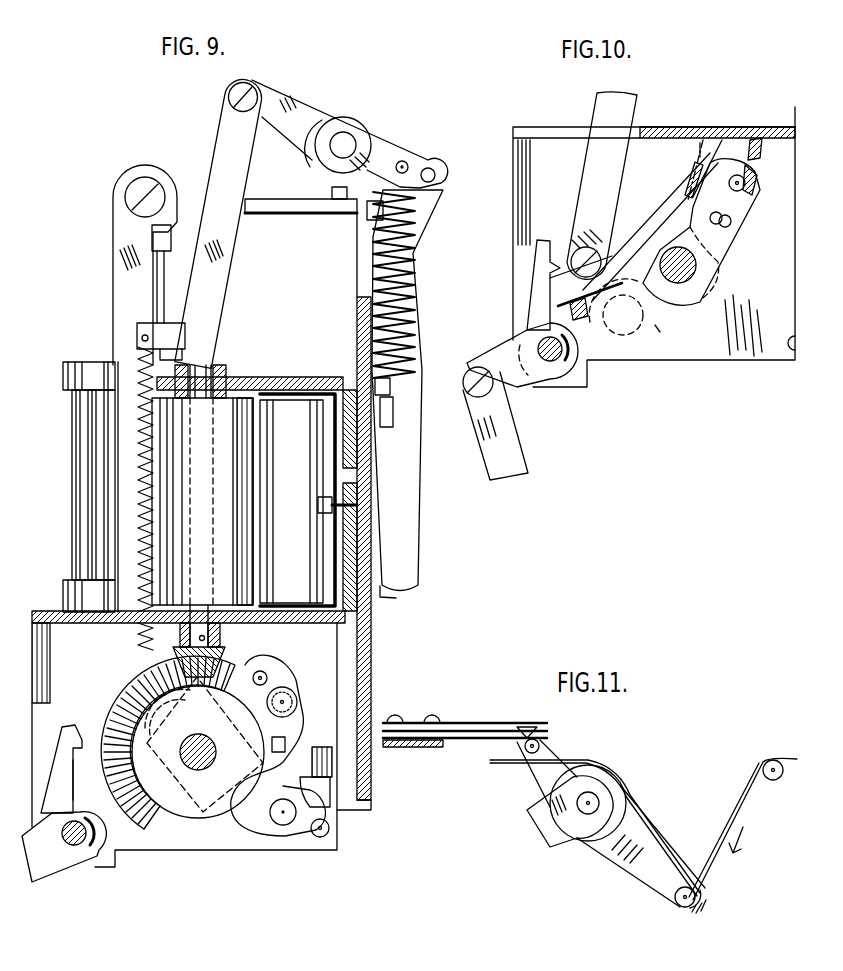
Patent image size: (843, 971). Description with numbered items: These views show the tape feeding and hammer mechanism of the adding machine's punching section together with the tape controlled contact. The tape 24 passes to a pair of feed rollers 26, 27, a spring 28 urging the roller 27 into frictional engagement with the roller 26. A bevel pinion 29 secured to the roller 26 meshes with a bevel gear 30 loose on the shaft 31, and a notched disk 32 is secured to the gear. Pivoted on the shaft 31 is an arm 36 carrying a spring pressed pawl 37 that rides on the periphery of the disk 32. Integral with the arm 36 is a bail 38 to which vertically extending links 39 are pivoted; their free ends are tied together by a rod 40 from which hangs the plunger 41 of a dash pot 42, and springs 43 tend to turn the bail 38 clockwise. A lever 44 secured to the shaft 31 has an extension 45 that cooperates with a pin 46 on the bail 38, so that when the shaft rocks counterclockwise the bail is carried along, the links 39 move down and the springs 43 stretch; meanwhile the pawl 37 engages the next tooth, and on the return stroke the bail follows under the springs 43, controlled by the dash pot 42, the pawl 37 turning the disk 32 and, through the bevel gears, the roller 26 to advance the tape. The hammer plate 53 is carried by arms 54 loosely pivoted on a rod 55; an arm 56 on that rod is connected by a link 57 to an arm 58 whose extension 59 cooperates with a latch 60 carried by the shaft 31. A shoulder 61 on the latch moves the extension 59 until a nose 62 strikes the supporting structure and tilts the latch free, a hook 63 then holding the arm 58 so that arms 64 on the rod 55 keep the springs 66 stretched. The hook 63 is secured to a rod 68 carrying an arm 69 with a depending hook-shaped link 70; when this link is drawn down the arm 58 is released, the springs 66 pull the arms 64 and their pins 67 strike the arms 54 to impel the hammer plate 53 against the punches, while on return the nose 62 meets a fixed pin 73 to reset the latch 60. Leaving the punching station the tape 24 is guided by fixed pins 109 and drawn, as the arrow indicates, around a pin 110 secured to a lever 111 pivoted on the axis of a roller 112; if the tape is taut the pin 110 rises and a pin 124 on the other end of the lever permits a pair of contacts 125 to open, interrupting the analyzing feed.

In FIG. 9, the tape 24 is at (253, 462).
In FIG. 11, the tape 24 is at (503, 763).
In FIG. 9, the feed roller 26 is at (225, 420).
In FIG. 9, the feed roller 27 is at (287, 417).
In FIG. 9, the spring 28 is at (335, 505).
In FIG. 9, the bevel pinion 29 is at (230, 647).
In FIG. 9, the bevel gear 30 is at (148, 815).
In FIG. 9, the shaft 31 is at (203, 762).
In FIG. 10, the shaft 31 is at (697, 265).
In FIG. 9, the notched disk 32 is at (257, 780).
In FIG. 9, the arm 36 is at (279, 681).
In FIG. 9, the spring pressed pawl 37 is at (285, 742).
In FIG. 9, the bail 38 is at (110, 780).
In FIG. 10, the bail 38 is at (652, 328).
In FIG. 9, the links 39 is at (135, 470).
In FIG. 9, the rod 40 is at (147, 187).
In FIG. 9, the plunger 41 is at (158, 277).
In FIG. 9, the dash pot 42 is at (77, 417).
In FIG. 9, the springs 43 is at (140, 393).
In FIG. 9, the lever 44 is at (268, 818).
In FIG. 10, the lever 44 is at (712, 298).
In FIG. 10, the extension 45 is at (562, 305).
In FIG. 10, the pin 46 is at (620, 337).
In FIG. 9, the hammer plate 53 is at (378, 592).
In FIG. 9, the arms 54 is at (407, 350).
In FIG. 9, the rod 55 is at (332, 147).
In FIG. 9, the arm 56 is at (280, 110).
In FIG. 9, the link 57 is at (222, 247).
In FIG. 10, the link 57 is at (607, 110).
In FIG. 10, the arm 58 is at (617, 252).
In FIG. 10, the extension 59 is at (692, 168).
In FIG. 9, the latch 60 is at (320, 778).
In FIG. 10, the latch 60 is at (700, 143).
In FIG. 10, the shoulder 61 is at (722, 150).
In FIG. 9, the nose 62 is at (331, 824).
In FIG. 10, the nose 62 is at (760, 140).
In FIG. 9, the hook 63 is at (64, 732).
In FIG. 10, the hook 63 is at (540, 248).
In FIG. 9, the arms 64 is at (410, 153).
In FIG. 9, the springs 66 is at (403, 220).
In FIG. 9, the pins 67 is at (433, 173).
In FIG. 9, the rod 68 is at (77, 845).
In FIG. 9, the arm 69 is at (35, 872).
In FIG. 10, the arm 69 is at (512, 387).
In FIG. 10, the link 70 is at (507, 442).
In FIG. 9, the fixed pin 73 is at (340, 837).
In FIG. 11, the fixed pins 109 is at (773, 780).
In FIG. 11, the pin 110 is at (677, 903).
In FIG. 11, the lever 111 is at (660, 848).
In FIG. 11, the roller 112 is at (610, 776).
In FIG. 11, the pin 124 is at (543, 745).
In FIG. 11, the contacts 125 is at (537, 731).